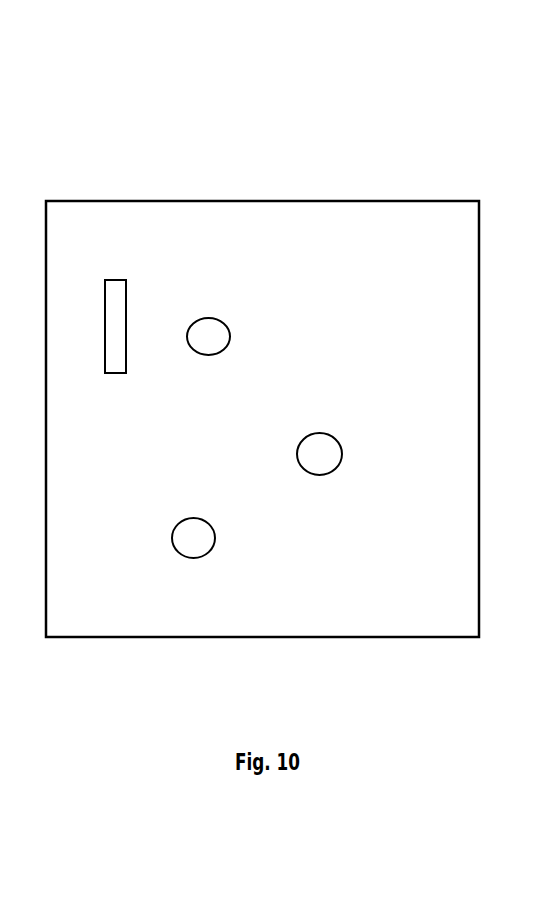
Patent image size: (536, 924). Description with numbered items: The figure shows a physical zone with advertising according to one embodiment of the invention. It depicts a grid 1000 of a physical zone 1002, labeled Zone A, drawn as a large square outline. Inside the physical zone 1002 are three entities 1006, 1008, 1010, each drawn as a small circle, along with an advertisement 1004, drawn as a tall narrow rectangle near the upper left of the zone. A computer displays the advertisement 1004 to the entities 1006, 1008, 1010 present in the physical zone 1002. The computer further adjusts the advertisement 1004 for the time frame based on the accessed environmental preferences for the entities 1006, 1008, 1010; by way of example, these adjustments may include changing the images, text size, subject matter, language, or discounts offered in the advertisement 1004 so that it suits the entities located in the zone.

The grid 1000 is at (261, 110).
The physical zone 1002 is at (264, 199).
The advertisement 1004 is at (117, 373).
The entity 1006 is at (213, 354).
The entity 1008 is at (183, 518).
The entity 1010 is at (318, 433).